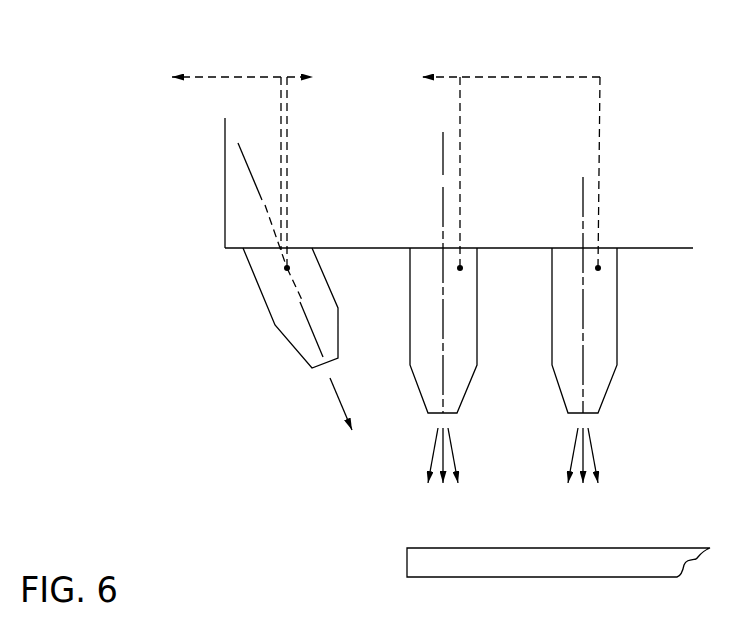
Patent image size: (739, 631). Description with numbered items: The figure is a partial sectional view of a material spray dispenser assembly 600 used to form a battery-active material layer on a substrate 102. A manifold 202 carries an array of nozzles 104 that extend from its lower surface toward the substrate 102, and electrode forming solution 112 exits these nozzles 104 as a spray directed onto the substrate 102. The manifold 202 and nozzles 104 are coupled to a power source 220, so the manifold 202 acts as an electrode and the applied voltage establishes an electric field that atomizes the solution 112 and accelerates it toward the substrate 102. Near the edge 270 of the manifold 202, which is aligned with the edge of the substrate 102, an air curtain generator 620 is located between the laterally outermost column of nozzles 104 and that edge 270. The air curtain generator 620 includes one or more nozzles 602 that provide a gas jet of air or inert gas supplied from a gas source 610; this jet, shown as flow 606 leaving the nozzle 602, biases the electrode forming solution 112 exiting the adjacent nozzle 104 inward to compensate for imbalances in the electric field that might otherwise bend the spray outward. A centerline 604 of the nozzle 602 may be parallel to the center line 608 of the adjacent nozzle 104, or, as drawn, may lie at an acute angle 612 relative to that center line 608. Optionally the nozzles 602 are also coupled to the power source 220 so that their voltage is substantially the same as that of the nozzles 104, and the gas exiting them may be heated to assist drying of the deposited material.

The substrate 102 is at (458, 578).
The nozzles 104 is at (477, 302).
The electrode forming solution 112 is at (427, 450).
The manifold 202 is at (233, 160).
The power source 220 is at (442, 153).
The edge 270 is at (225, 180).
The material spray dispenser assembly 600 is at (218, 207).
The nozzles 602 is at (255, 282).
The centerline 604 is at (297, 302).
The gas flow direction 606 is at (333, 405).
The center line 608 is at (443, 195).
The gas source 610 is at (174, 129).
The acute angle 612 is at (443, 153).
The air curtain generator 620 is at (220, 315).